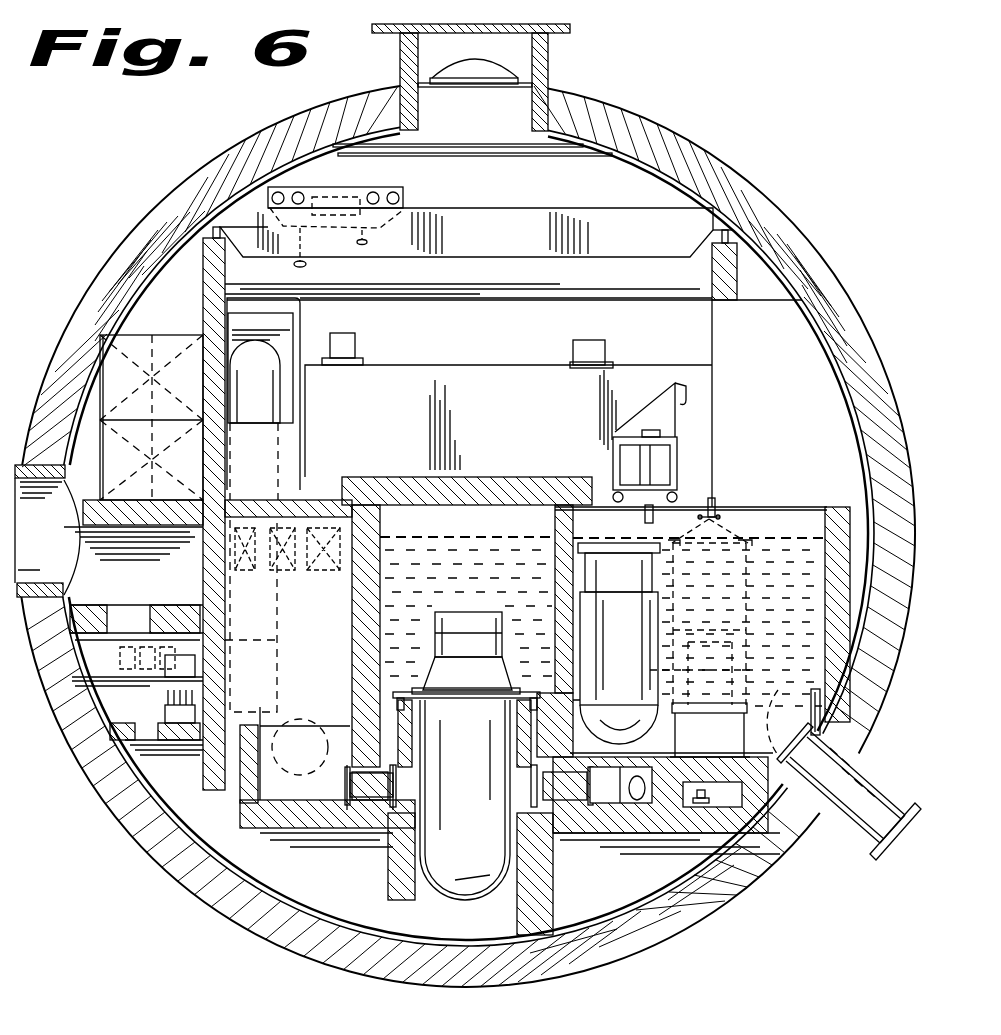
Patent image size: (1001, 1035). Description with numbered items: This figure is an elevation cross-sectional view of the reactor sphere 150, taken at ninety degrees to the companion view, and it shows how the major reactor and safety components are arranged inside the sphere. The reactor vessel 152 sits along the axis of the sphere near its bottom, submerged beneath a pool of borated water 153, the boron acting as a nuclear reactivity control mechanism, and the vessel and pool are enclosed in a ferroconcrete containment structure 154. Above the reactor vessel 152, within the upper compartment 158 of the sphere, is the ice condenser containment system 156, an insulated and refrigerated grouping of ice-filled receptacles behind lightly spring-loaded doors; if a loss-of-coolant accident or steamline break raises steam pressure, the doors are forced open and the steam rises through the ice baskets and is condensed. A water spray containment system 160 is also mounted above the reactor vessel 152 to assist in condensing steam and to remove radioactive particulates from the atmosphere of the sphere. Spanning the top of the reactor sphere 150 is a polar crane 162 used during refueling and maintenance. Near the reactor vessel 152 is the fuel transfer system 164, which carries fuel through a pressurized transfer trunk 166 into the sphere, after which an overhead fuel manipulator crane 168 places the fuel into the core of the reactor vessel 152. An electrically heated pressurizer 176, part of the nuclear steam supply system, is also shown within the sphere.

The reactor sphere 150 is at (745, 152).
The reactor vessel 152 is at (457, 872).
The pool of borated water 153 is at (467, 637).
The ferroconcrete containment structure 154 is at (315, 935).
The ice condenser containment system 156 is at (185, 335).
The upper compartment 158 is at (690, 317).
The water spray containment system 160 is at (466, 213).
The polar crane 162 is at (356, 191).
The fuel transfer system 164 is at (850, 827).
The pressurized transfer trunk 166 is at (808, 672).
The overhead fuel manipulator crane 168 is at (615, 432).
The pressurizer 176 is at (300, 333).